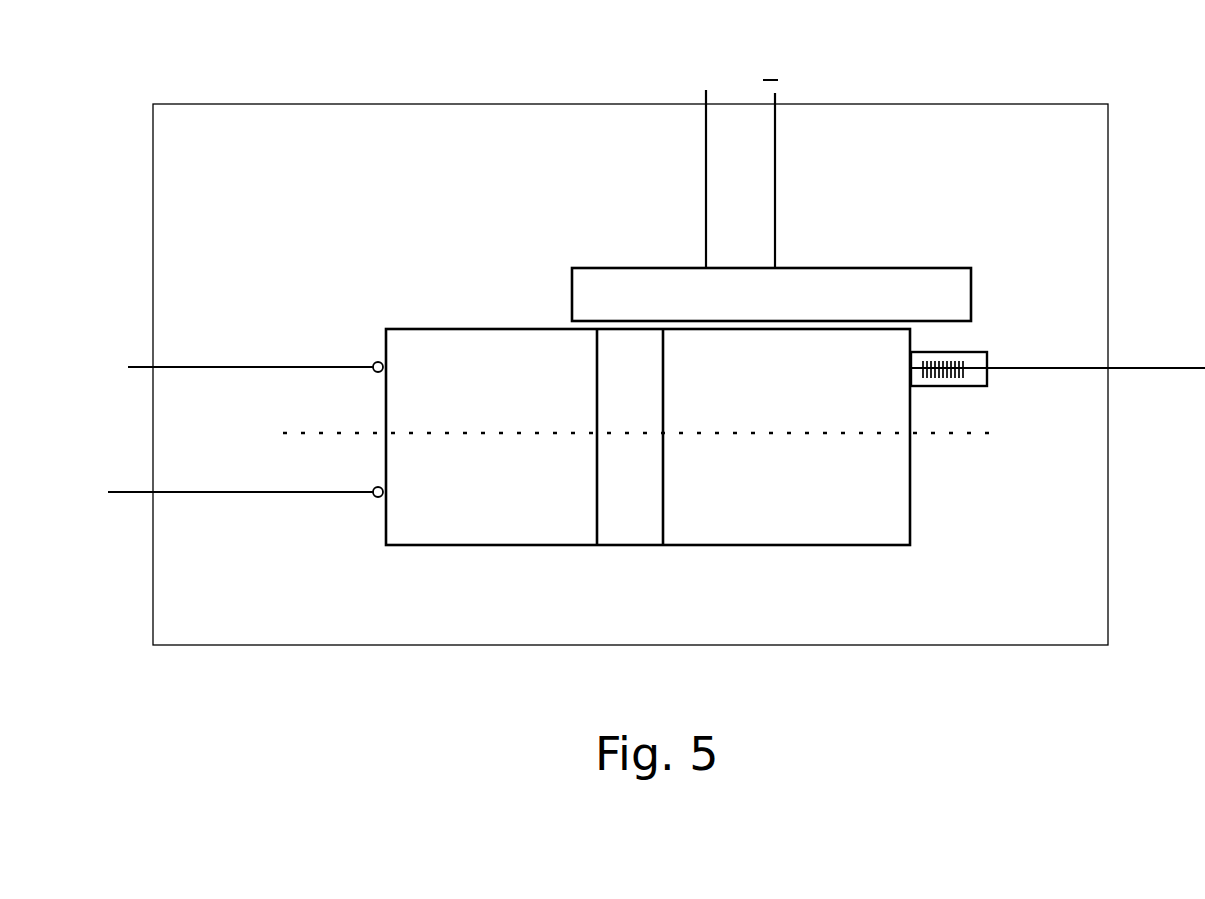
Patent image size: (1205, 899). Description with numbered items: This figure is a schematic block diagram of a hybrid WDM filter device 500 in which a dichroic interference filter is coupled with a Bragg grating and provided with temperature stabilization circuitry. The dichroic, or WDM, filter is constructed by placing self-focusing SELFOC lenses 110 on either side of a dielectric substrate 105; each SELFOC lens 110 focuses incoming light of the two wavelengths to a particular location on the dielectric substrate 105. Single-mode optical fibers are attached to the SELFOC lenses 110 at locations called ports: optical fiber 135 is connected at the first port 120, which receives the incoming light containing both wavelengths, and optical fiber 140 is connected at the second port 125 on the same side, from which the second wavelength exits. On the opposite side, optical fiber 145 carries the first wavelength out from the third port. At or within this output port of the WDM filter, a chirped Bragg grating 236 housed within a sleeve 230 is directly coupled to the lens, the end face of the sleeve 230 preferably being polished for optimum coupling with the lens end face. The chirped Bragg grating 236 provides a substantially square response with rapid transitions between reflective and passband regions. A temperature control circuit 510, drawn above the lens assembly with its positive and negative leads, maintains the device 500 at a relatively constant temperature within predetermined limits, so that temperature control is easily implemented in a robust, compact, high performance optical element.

The device 500 is at (298, 645).
The SELFOC lens 110 is at (425, 546).
The dielectric substrate 105 is at (605, 546).
The temperature control circuit 510 is at (668, 268).
The optical fiber 140 is at (320, 367).
The port 2 125 is at (375, 364).
The optical fiber 135 is at (323, 493).
The port 1 120 is at (375, 497).
The optical fiber 145 is at (1200, 368).
The sleeve 230 is at (988, 380).
The chirped Bragg grating 236 is at (935, 375).